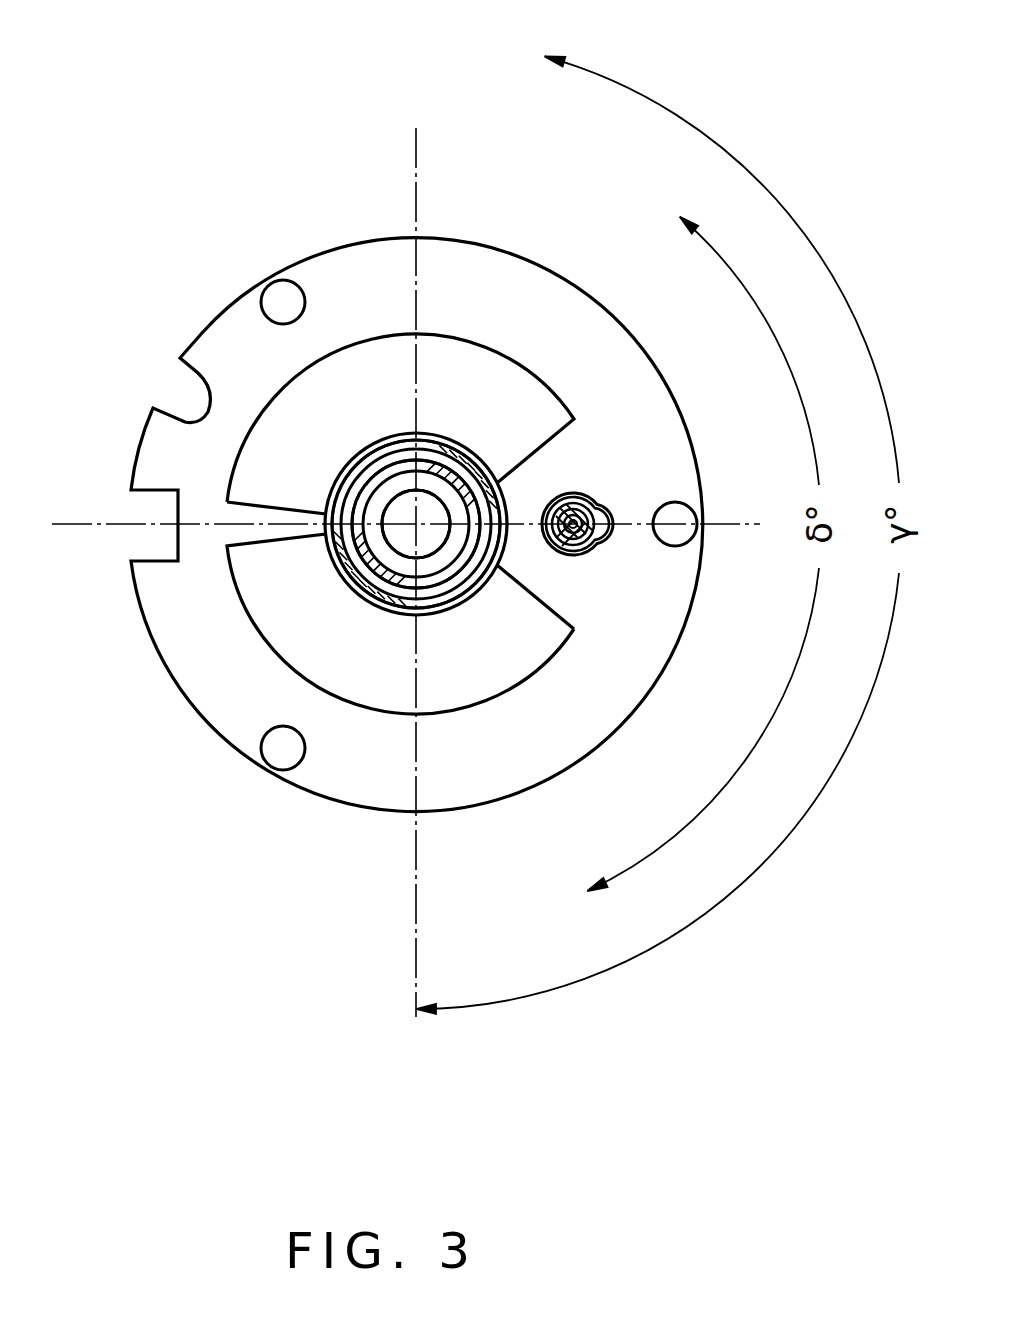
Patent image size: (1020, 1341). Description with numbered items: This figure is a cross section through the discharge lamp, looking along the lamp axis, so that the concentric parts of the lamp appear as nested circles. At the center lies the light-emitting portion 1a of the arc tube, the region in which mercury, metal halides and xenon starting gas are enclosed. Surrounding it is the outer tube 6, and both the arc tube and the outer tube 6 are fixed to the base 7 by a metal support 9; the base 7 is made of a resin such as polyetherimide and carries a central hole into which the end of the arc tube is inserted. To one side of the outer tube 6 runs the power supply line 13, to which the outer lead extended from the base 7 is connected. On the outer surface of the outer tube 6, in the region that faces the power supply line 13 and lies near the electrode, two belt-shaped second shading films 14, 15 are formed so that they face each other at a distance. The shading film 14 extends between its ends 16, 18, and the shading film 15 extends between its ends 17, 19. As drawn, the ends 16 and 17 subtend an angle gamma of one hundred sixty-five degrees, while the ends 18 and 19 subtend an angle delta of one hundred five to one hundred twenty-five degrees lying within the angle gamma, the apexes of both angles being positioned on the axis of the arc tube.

The light-emitting portion 1a is at (360, 593).
The outer tube 6 is at (342, 568).
The base 7 is at (342, 265).
The support 9 is at (298, 397).
The power supply line 13 is at (587, 495).
The second shading film 14 is at (436, 604).
The second shading film 15 is at (440, 495).
The end of shading film 16 is at (416, 830).
The end of shading film 17 is at (416, 524).
The end of shading film 18 is at (416, 524).
The end of shading film 19 is at (416, 524).